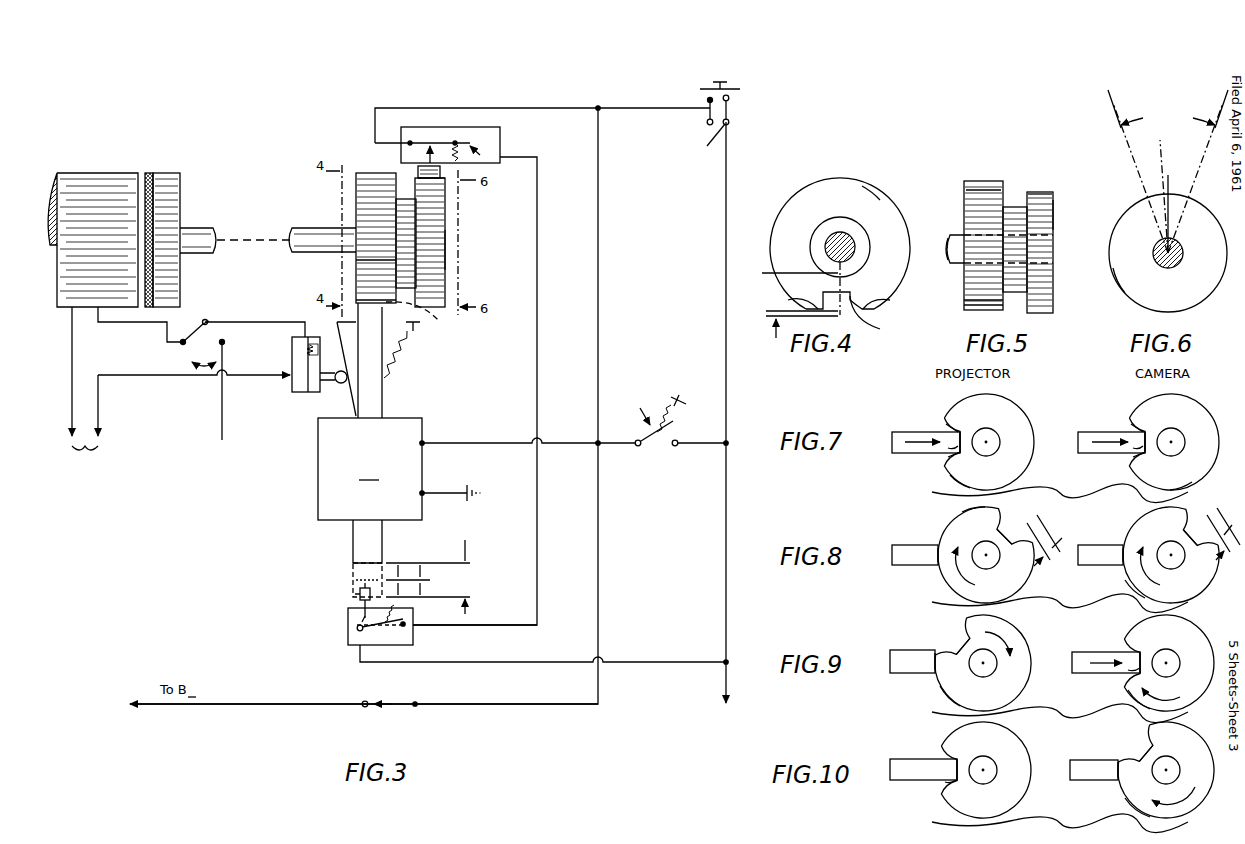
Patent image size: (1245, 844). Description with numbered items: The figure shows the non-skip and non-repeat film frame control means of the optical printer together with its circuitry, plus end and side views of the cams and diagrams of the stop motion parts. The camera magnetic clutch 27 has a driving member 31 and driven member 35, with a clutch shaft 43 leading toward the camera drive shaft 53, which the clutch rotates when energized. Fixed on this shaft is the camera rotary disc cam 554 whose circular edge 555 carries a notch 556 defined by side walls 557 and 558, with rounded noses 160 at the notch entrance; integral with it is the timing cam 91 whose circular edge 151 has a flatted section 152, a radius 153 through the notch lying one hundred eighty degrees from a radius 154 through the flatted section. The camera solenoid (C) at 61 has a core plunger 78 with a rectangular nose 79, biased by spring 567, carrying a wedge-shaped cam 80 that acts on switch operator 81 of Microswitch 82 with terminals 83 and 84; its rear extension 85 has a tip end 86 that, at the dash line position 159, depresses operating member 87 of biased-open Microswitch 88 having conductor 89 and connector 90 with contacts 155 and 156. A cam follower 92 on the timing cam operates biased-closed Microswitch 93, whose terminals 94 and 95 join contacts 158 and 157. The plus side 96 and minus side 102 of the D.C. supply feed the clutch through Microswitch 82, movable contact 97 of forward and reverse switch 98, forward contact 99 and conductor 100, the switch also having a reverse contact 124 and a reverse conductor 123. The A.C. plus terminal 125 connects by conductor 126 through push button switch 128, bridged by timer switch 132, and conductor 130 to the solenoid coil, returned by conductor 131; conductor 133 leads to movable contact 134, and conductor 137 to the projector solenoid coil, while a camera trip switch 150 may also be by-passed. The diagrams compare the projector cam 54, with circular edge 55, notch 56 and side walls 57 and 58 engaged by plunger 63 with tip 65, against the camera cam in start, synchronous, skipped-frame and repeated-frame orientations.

In FIG. 3, the camera magnetic clutch 27 is at (114, 172).
In FIG. 3, the driving member 31 is at (70, 173).
In FIG. 3, the driven member 35 is at (170, 173).
In FIG. 3, the motor shaft 43 is at (200, 228).
In FIG. 3, the camera drive shaft 53 is at (306, 228).
In FIG. 4, the camera drive shaft 53 is at (828, 240).
In FIG. 5, the camera drive shaft 53 is at (949, 240).
In FIG. 6, the camera drive shaft 53 is at (1156, 260).
In FIG. 7, the projector rotary disc cam 54 is at (1027, 412).
In FIG. 8, the projector rotary disc cam 54 is at (940, 581).
In FIG. 9, the projector rotary disc cam 54 is at (1020, 636).
In FIG. 10, the projector rotary disc cam 54 is at (1022, 746).
In FIG. 7, the circular edge of projector cam 55 is at (950, 479).
In FIG. 8, the circular edge of projector cam 55 is at (965, 513).
In FIG. 9, the circular edge of projector cam 55 is at (942, 690).
In FIG. 7, the notch of projector cam 56 is at (950, 447).
In FIG. 8, the notch of projector cam 56 is at (1007, 532).
In FIG. 9, the notch of projector cam 56 is at (953, 630).
In FIG. 10, the notch of projector cam 56 is at (952, 761).
In FIG. 4, the flat side wall 57 is at (872, 318).
In FIG. 7, the flat side wall 57 is at (951, 453).
In FIG. 4, the flat side wall 58 is at (815, 300).
In FIG. 7, the flat side wall 58 is at (948, 428).
In FIG. 3, the camera solenoid (C) 61 is at (425, 418).
In FIG. 7, the latching plunger of solenoid (B) 63 is at (910, 431).
In FIG. 8, the latching plunger of solenoid (B) 63 is at (905, 544).
In FIG. 9, the latching plunger of solenoid (B) 63 is at (903, 650).
In FIG. 10, the latching plunger of solenoid (B) 63 is at (905, 757).
In FIG. 7, the notch-engaging tip end 65 is at (953, 428).
In FIG. 8, the notch-engaging tip end 65 is at (925, 545).
In FIG. 9, the notch-engaging tip end 65 is at (919, 650).
In FIG. 10, the notch-engaging tip end 65 is at (940, 778).
In FIG. 3, the core plunger 78 is at (384, 403).
In FIG. 7, the core plunger 78 is at (1085, 453).
In FIG. 8, the core plunger 78 is at (1095, 544).
In FIG. 9, the core plunger 78 is at (1095, 652).
In FIG. 10, the core plunger 78 is at (1082, 760).
In FIG. 3, the rectangular nose 79 is at (356, 306).
In FIG. 7, the rectangular nose 79 is at (1142, 440).
In FIG. 8, the rectangular nose 79 is at (1108, 562).
In FIG. 9, the rectangular nose 79 is at (1122, 668).
In FIG. 10, the rectangular nose 79 is at (1105, 776).
In FIG. 3, the wedge-shaped cam 80 is at (350, 340).
In FIG. 3, the switch operator 81 is at (338, 383).
In FIG. 3, the Microswitch 82 is at (296, 388).
In FIG. 3, the terminal connector 83 is at (206, 378).
In FIG. 3, the terminal connector 84 is at (265, 322).
In FIG. 3, the rear extension 85 is at (353, 549).
In FIG. 3, the tip end 86 is at (353, 569).
In FIG. 3, the operating member 87 is at (358, 594).
In FIG. 3, the Microswitch 88 is at (347, 646).
In FIG. 3, the conductor 89 is at (360, 662).
In FIG. 3, the terminal connector 90 is at (448, 636).
In FIG. 3, the timing cam 91 is at (447, 263).
In FIG. 5, the timing cam 91 is at (1055, 216).
In FIG. 6, the timing cam 91 is at (1130, 306).
In FIG. 3, the cam follower 92 is at (418, 171).
In FIG. 3, the Microswitch 93 is at (505, 130).
In FIG. 3, the terminal connector 94 is at (376, 108).
In FIG. 3, the terminal connector 95 is at (540, 157).
In FIG. 3, the plus side 96 is at (101, 412).
In FIG. 3, the movable contact 97 is at (205, 318).
In FIG. 3, the forward and reverse switch 98 is at (216, 317).
In FIG. 3, the forward contact 99 is at (182, 338).
In FIG. 3, the conductor 100 is at (140, 323).
In FIG. 3, the minus side 102 is at (70, 400).
In FIG. 3, the reverse conductor 123 is at (222, 420).
In FIG. 3, the reverse contact 124 is at (226, 341).
In FIG. 3, the plus terminal 125 is at (722, 666).
In FIG. 3, the conductor 126 is at (726, 292).
In FIG. 3, the push button switch 128 is at (737, 84).
In FIG. 3, the conductor 130 is at (599, 308).
In FIG. 3, the conductor 131 is at (452, 491).
In FIG. 3, the timer switch 132 is at (705, 138).
In FIG. 3, the conductor 133 is at (515, 707).
In FIG. 3, the movable contact 134 is at (402, 707).
In FIG. 3, the conductor 137 is at (258, 707).
In FIG. 3, the camera trip switch 150 is at (653, 453).
In FIG. 3, the circular edge 151 is at (436, 231).
In FIG. 5, the circular edge 151 is at (1048, 306).
In FIG. 6, the circular edge 151 is at (1110, 251).
In FIG. 3, the flatted section 152 is at (450, 179).
In FIG. 5, the flatted section 152 is at (1043, 192).
In FIG. 6, the flatted section 152 is at (1158, 178).
In FIG. 4, the radius 153 is at (789, 288).
In FIG. 6, the radius 154 is at (1172, 178).
In FIG. 3, the fixed contact 155 is at (357, 630).
In FIG. 3, the movable contact 156 is at (406, 622).
In FIG. 3, the fixed contact 157 is at (476, 151).
In FIG. 3, the movable contact 158 is at (440, 140).
In FIG. 3, the dash line position 159 is at (356, 597).
In FIG. 4, the rounded noses 160 is at (778, 310).
In FIG. 5, the rounded noses 160 is at (962, 287).
In FIG. 3, the camera rotary disc cam 554 is at (357, 172).
In FIG. 4, the camera rotary disc cam 554 is at (835, 178).
In FIG. 5, the camera rotary disc cam 554 is at (964, 180).
In FIG. 7, the camera rotary disc cam 554 is at (1135, 412).
In FIG. 8, the camera rotary disc cam 554 is at (1168, 508).
In FIG. 9, the camera rotary disc cam 554 is at (1130, 636).
In FIG. 10, the camera rotary disc cam 554 is at (1150, 729).
In FIG. 3, the circular edge of camera cam 555 is at (356, 263).
In FIG. 4, the circular edge of camera cam 555 is at (868, 186).
In FIG. 5, the circular edge of camera cam 555 is at (990, 188).
In FIG. 7, the circular edge of camera cam 555 is at (1182, 486).
In FIG. 8, the circular edge of camera cam 555 is at (1127, 584).
In FIG. 9, the circular edge of camera cam 555 is at (1132, 695).
In FIG. 10, the circular edge of camera cam 555 is at (1128, 800).
In FIG. 3, the notch of camera cam 556 is at (425, 317).
In FIG. 4, the notch of camera cam 556 is at (858, 322).
In FIG. 5, the notch of camera cam 556 is at (968, 303).
In FIG. 7, the notch of camera cam 556 is at (1140, 448).
In FIG. 8, the notch of camera cam 556 is at (1175, 524).
In FIG. 9, the notch of camera cam 556 is at (1150, 642).
In FIG. 10, the notch of camera cam 556 is at (1143, 753).
In FIG. 7, the side wall 557 is at (1134, 456).
In FIG. 7, the side wall 558 is at (1135, 435).
In FIG. 3, the biasing spring 567 is at (402, 347).